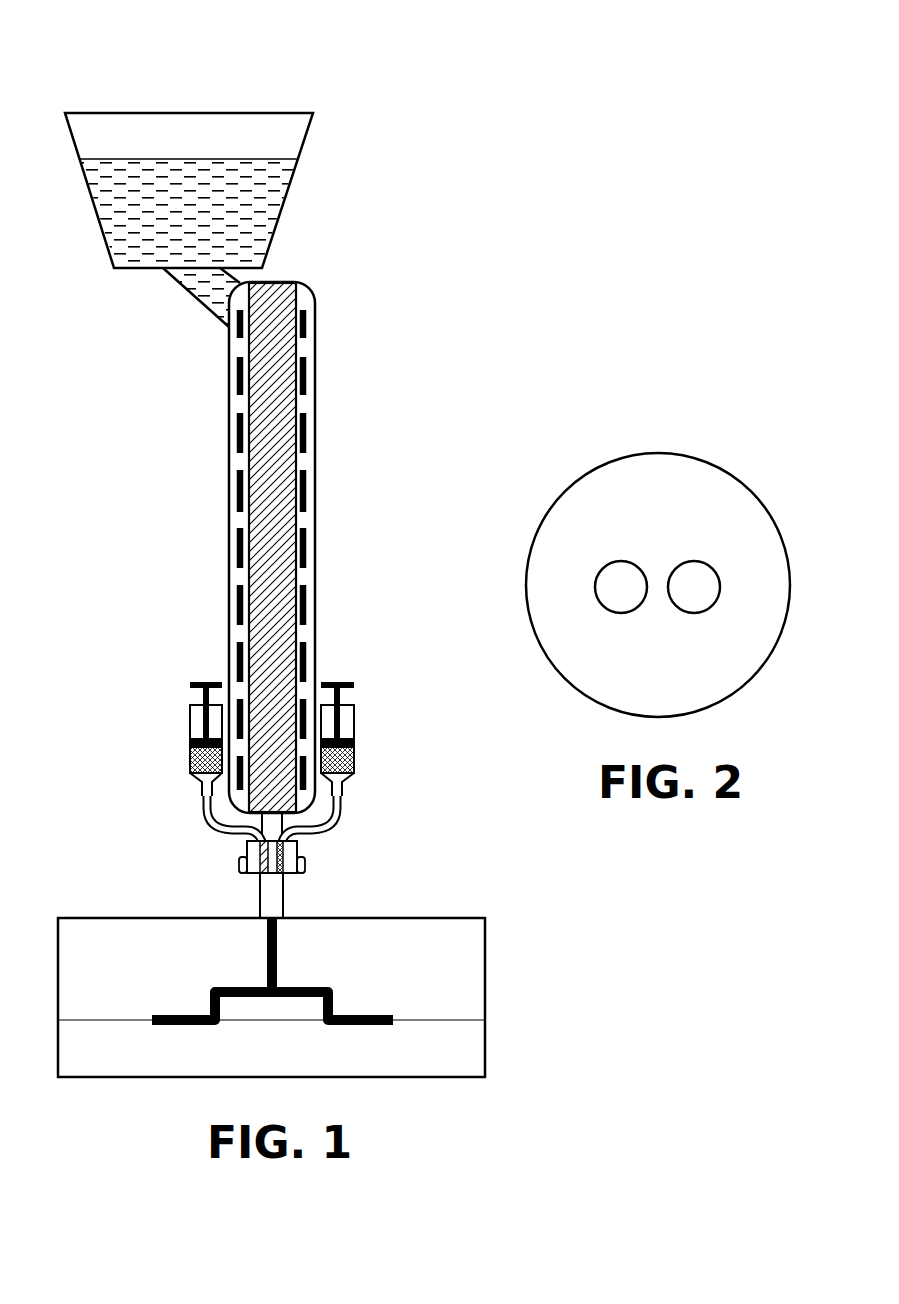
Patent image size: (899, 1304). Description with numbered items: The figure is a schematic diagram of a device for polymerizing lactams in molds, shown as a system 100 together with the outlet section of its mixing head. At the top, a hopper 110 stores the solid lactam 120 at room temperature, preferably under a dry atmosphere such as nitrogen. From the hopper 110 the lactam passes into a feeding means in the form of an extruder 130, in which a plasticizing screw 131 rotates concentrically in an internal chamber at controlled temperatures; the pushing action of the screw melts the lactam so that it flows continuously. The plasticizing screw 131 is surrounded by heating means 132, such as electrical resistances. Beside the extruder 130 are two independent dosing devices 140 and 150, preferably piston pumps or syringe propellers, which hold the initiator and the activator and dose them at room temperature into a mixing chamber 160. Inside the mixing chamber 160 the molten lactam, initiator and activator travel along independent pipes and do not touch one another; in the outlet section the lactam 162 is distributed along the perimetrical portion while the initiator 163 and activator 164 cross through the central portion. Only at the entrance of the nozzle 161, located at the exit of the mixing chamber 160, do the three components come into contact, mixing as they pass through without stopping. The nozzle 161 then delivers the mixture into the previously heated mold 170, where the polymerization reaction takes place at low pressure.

In FIG. 1, the system 100 is at (131, 101).
In FIG. 1, the hopper 110 is at (175, 138).
In FIG. 1, the solid lactam 120 is at (212, 236).
In FIG. 1, the extruder 130 is at (316, 398).
In FIG. 1, the plasticizing screw 131 is at (248, 462).
In FIG. 1, the heating means 132 is at (241, 553).
In FIG. 1, the dosing device 140 is at (190, 727).
In FIG. 1, the dosing device 150 is at (355, 732).
In FIG. 1, the mixing chamber 160 is at (252, 852).
In FIG. 2, the mixing chamber 160 is at (705, 463).
In FIG. 1, the nozzle 161 is at (284, 893).
In FIG. 2, the lactam 162 is at (612, 542).
In FIG. 2, the initiator 163 is at (617, 590).
In FIG. 2, the activator 164 is at (702, 593).
In FIG. 1, the mold 170 is at (138, 965).